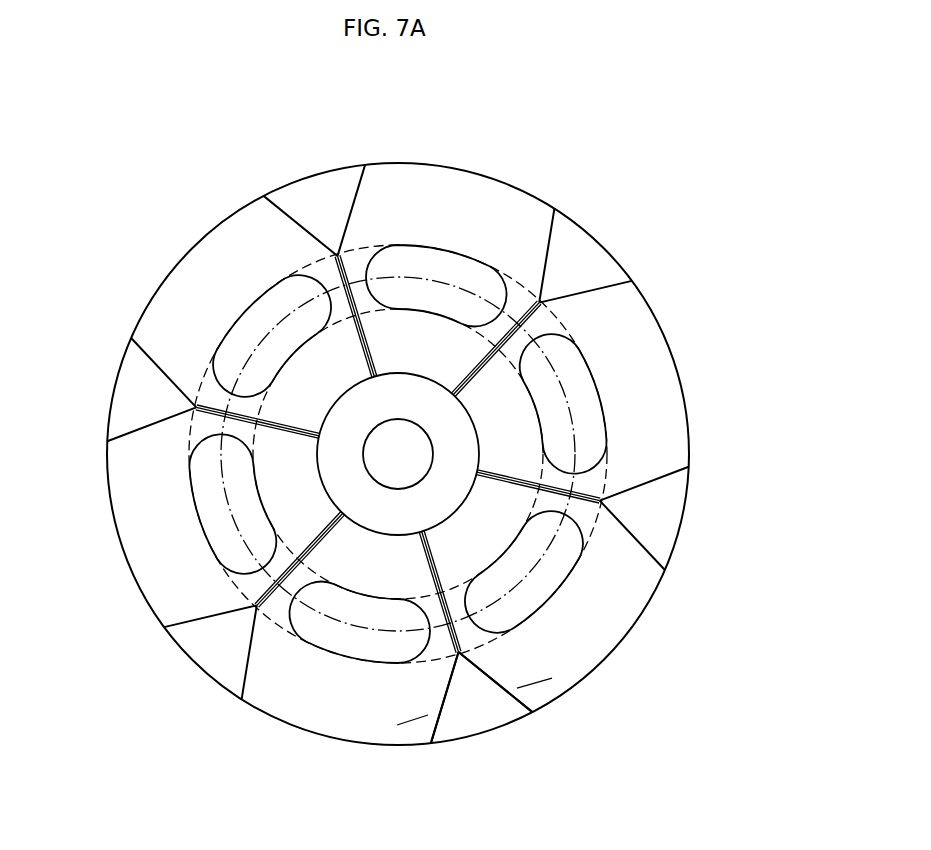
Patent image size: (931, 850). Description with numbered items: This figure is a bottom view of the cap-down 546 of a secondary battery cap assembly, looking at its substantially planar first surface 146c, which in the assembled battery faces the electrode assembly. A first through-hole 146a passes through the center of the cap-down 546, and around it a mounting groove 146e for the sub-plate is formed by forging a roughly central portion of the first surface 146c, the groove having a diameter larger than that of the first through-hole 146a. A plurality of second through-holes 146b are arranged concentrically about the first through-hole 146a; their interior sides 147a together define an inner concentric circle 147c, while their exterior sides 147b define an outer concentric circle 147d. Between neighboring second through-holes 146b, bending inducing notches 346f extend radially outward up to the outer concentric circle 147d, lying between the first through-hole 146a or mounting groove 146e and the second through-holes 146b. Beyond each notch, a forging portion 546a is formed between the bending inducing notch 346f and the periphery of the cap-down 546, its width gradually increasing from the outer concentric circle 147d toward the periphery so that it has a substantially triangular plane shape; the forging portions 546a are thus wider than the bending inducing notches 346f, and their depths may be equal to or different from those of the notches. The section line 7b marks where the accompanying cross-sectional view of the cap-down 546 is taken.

The cap-down 546 is at (128, 203).
The forging portion 546a is at (318, 192).
The bending inducing notch 346f is at (343, 283).
The first through-hole 146a is at (418, 443).
The second through-hole 146b is at (592, 438).
The first surface 146c is at (607, 622).
The mounting groove 146e is at (382, 515).
The interior side 147a is at (530, 387).
The exterior side 147b is at (600, 408).
The inner concentric circle 147c is at (732, 494).
The outer concentric circle 147d is at (597, 532).
The line 7b- 7b is at (400, 725).